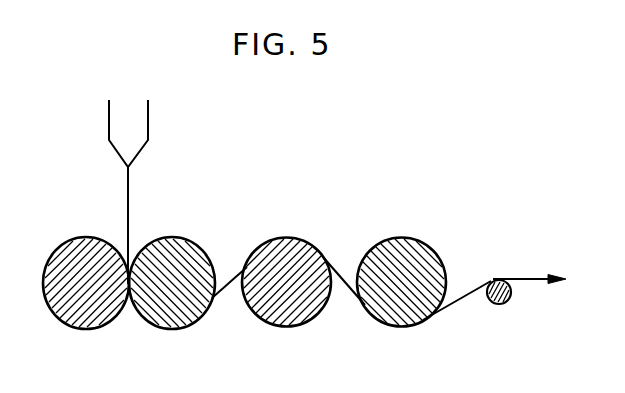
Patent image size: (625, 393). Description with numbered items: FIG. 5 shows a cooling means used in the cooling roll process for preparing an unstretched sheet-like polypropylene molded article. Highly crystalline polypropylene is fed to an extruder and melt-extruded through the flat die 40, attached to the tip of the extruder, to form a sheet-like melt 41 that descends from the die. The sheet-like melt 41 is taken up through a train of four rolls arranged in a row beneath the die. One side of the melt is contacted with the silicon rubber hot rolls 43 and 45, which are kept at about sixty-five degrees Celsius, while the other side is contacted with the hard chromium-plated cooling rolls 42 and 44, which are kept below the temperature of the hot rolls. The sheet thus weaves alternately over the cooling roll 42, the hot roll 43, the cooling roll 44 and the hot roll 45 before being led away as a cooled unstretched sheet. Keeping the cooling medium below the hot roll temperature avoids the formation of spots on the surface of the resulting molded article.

The flat die 40 is at (140, 125).
The sheet-like melt 41 is at (129, 189).
The hard chromium-plated cooling roll 42 is at (110, 315).
The silicon rubber hot roll 43 is at (180, 318).
The hard chromium-plated cooling roll 44 is at (292, 318).
The silicon rubber hot roll 45 is at (413, 318).